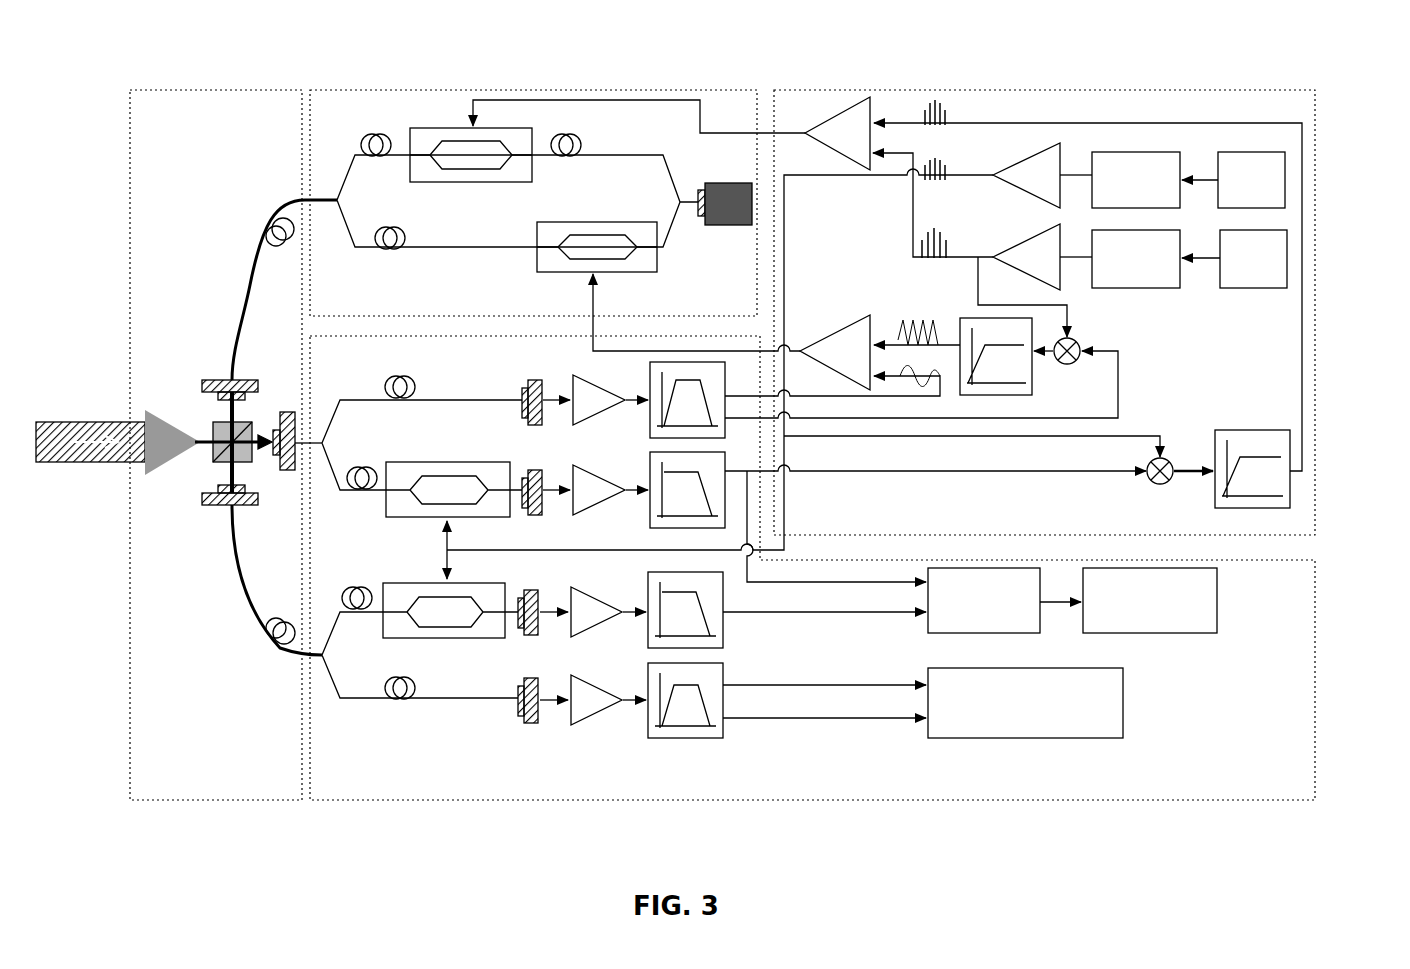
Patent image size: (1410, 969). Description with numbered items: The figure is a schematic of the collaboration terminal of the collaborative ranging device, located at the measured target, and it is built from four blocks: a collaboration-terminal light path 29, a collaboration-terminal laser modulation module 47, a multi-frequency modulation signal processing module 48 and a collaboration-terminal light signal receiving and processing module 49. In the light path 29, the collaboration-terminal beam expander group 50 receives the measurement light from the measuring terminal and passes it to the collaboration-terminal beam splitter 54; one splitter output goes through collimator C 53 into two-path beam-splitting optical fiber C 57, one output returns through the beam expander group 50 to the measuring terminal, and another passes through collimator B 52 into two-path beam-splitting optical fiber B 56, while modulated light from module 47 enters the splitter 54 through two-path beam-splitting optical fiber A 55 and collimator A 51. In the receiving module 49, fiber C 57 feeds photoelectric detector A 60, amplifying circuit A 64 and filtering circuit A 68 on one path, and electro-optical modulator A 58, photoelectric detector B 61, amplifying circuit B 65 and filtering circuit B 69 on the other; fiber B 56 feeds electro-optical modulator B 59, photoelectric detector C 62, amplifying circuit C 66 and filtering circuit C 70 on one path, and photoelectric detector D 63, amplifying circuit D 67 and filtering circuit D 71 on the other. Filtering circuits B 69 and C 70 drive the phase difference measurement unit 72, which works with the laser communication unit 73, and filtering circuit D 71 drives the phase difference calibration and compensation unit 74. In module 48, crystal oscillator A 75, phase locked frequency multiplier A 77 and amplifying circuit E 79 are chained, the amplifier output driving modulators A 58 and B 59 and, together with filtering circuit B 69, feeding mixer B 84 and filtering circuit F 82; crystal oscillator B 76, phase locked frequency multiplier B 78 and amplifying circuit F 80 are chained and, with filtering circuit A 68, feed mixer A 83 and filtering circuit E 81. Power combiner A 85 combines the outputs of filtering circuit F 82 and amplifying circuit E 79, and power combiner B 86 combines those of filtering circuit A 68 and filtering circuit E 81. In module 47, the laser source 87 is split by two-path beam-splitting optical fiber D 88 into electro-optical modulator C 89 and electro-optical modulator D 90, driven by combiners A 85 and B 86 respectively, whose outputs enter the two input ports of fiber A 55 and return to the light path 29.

The collaboration-terminal light path 29 is at (130, 172).
The collaboration-terminal laser modulation module 47 is at (322, 90).
The multi-frequency modulation signal processing module 48 is at (780, 93).
The collaboration-terminal light signal receiving and processing module 49 is at (310, 800).
The collaboration-terminal beam expander group 50 is at (200, 430).
The collimator A 51 is at (213, 423).
The collimator B 52 is at (205, 503).
The collimator C 53 is at (280, 470).
The collaboration-terminal beam splitter 54 is at (202, 382).
The two-path beam-splitting optical fiber A 55 is at (245, 283).
The two-path beam-splitting optical fiber B 56 is at (250, 625).
The two-path beam-splitting optical fiber C 57 is at (352, 398).
The electro-optical modulator A 58 is at (448, 462).
The electro-optical modulator B 59 is at (385, 640).
The photoelectric detector A 60 is at (527, 473).
The photoelectric detector B 61 is at (522, 387).
The photoelectric detector C 62 is at (527, 633).
The photoelectric detector D 63 is at (520, 727).
The amplifying circuit A 64 is at (600, 386).
The amplifying circuit B 65 is at (580, 378).
The amplifying circuit C 66 is at (572, 637).
The amplifying circuit D 67 is at (600, 717).
The filtering circuit A 68 is at (705, 362).
The filtering circuit B 69 is at (650, 450).
The filtering circuit C 70 is at (722, 645).
The filtering circuit D 71 is at (713, 740).
The phase difference measurement unit 72 is at (930, 633).
The laser communication unit 73 is at (1145, 633).
The phase difference calibration and compensation unit 74 is at (947, 738).
The crystal oscillator A 75 is at (1290, 178).
The crystal oscillator B 76 is at (1290, 260).
The phase locked frequency multiplier A 77 is at (1160, 152).
The phase locked frequency multiplier B 78 is at (1176, 232).
The amplifying circuit E 79 is at (1003, 167).
The amplifying circuit F 80 is at (1050, 236).
The filtering circuit E 81 is at (1035, 320).
The filtering circuit F 82 is at (1292, 493).
The mixer A 83 is at (1118, 355).
The mixer B 84 is at (1175, 483).
The power combiner A 85 is at (850, 100).
The power combiner B 86 is at (837, 315).
The laser source 87 is at (710, 183).
The two-path beam-splitting optical fiber D 88 is at (640, 157).
The electro-optical modulator C 89 is at (633, 225).
The electro-optical modulator D 90 is at (420, 128).